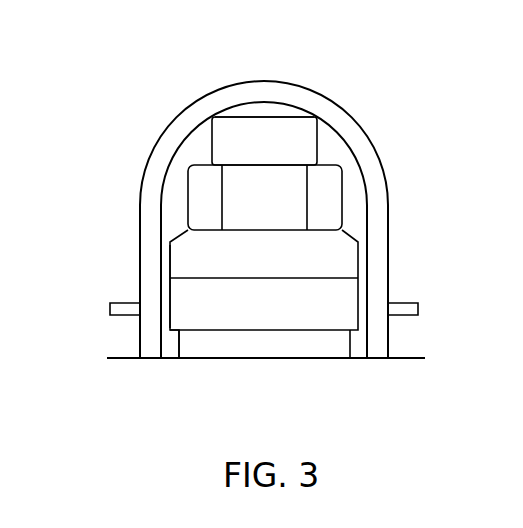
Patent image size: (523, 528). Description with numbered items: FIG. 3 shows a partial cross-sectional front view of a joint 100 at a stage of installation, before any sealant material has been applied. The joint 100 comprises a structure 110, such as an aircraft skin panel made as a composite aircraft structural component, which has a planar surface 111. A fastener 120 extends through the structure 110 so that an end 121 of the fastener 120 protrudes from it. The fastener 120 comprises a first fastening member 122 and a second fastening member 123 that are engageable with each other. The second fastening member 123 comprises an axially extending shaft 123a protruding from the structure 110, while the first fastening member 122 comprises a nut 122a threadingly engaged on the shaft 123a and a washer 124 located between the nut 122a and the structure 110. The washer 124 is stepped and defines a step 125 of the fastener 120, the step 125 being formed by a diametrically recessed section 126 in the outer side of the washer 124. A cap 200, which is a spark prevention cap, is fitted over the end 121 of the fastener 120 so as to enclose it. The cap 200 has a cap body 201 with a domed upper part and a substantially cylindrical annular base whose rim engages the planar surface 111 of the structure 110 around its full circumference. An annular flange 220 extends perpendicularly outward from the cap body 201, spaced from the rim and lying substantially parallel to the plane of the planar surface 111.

The joint 100 is at (422, 88).
The structure 110 is at (408, 358).
The planar surface 111 is at (127, 358).
The fastener 120 is at (330, 187).
The end of the fastener 121 is at (183, 212).
The first fastening member 122 is at (332, 202).
The nut 122a is at (141, 231).
The second fastening member 123 is at (307, 143).
The shaft 123a is at (232, 125).
The washer 124 is at (297, 350).
The step 125 is at (177, 333).
The diametrically recessed section 126 is at (203, 350).
The cap 200 is at (288, 95).
The cap body 201 is at (152, 275).
The flange 220 is at (408, 308).